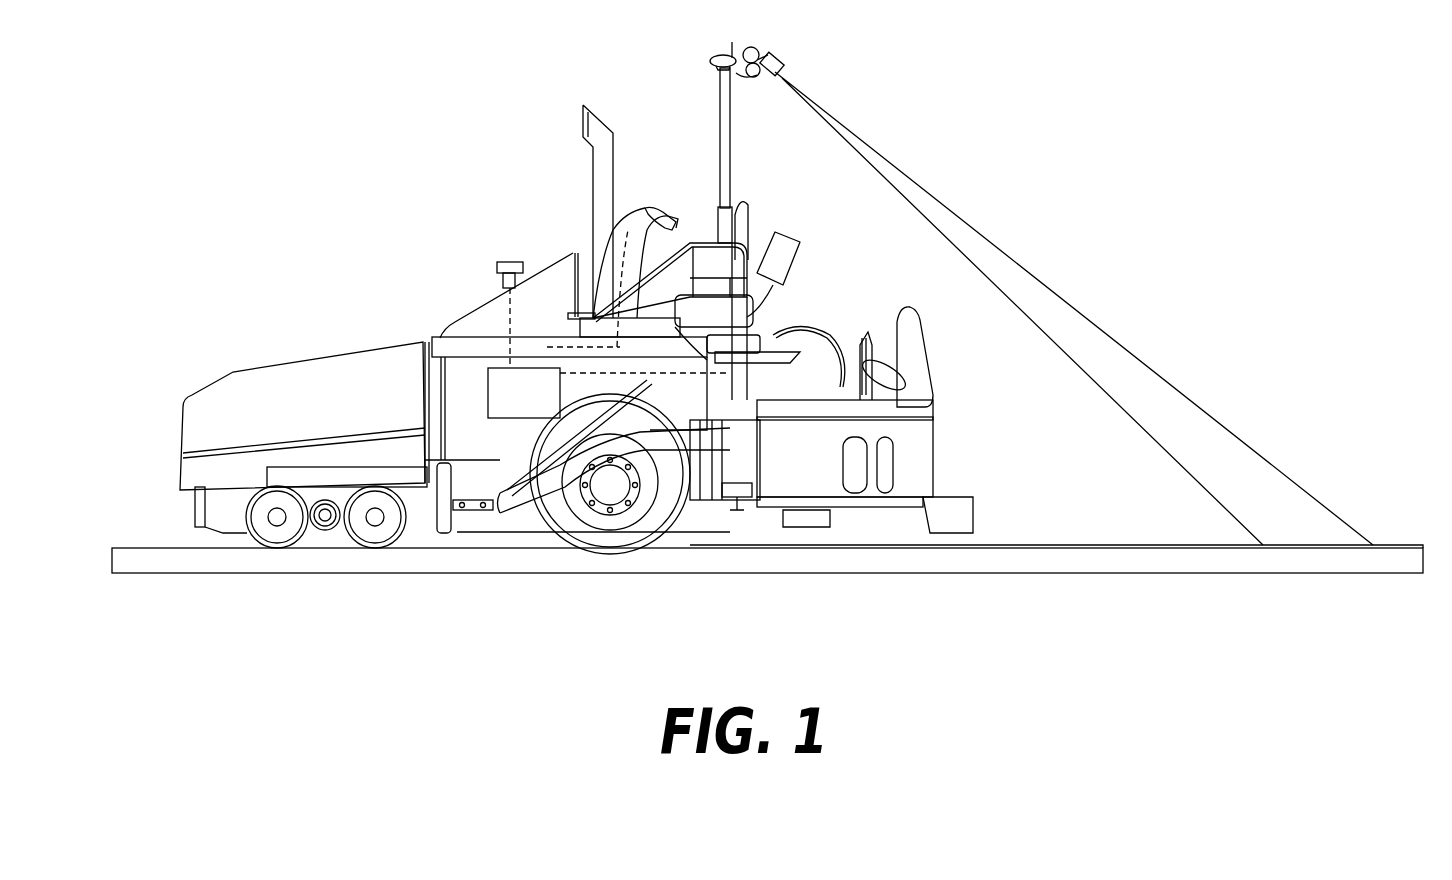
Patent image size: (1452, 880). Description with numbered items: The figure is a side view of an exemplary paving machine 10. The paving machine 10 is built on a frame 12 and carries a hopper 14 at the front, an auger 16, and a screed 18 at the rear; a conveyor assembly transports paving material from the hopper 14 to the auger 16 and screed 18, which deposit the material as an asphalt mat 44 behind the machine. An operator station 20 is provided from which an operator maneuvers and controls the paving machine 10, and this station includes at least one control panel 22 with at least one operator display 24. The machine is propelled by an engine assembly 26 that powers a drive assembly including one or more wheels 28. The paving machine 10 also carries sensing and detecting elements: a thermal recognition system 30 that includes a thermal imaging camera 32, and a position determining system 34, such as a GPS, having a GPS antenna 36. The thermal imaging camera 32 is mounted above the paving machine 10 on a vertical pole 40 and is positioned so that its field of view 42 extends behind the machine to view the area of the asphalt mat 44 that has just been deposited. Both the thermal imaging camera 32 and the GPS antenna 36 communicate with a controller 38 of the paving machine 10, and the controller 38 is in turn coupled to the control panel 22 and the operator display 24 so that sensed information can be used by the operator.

The paving machine 10 is at (388, 223).
The frame 12 is at (473, 523).
The hopper 14 is at (313, 368).
The auger 16 is at (735, 487).
The screed 18 is at (893, 530).
The operator station 20 is at (668, 165).
The control panel 22 is at (628, 212).
The operator display 24 is at (650, 212).
The engine assembly 26 is at (474, 382).
The wheel 28 is at (608, 542).
The thermal recognition system 30 is at (672, 60).
The thermal imaging camera 32 is at (768, 62).
The position determining system 34 is at (475, 290).
The GPS antenna 36 is at (502, 262).
The controller 38 is at (536, 404).
The vertical pole 40 is at (730, 162).
The field of view 42 is at (1137, 365).
The asphalt mat 44 is at (1092, 545).